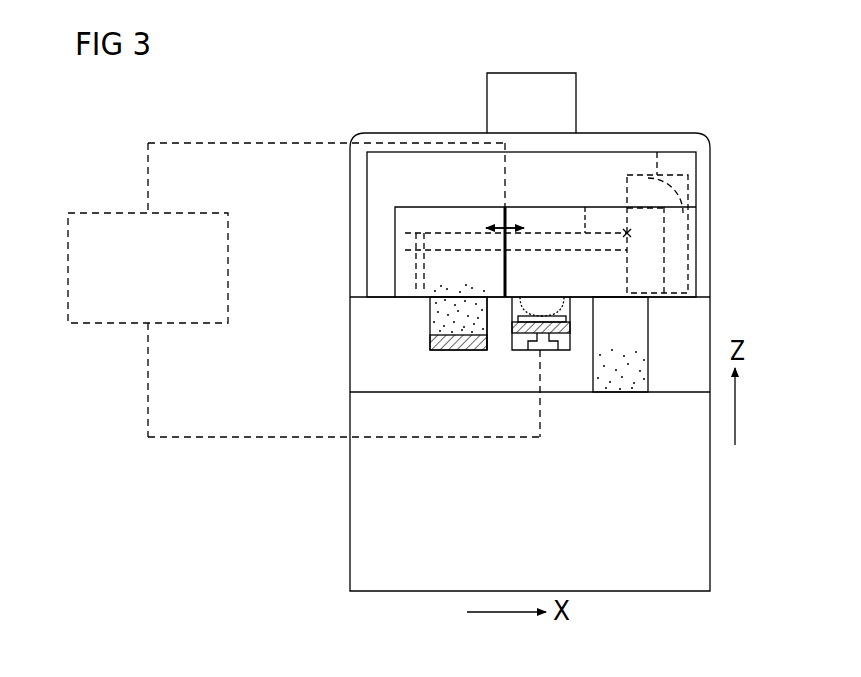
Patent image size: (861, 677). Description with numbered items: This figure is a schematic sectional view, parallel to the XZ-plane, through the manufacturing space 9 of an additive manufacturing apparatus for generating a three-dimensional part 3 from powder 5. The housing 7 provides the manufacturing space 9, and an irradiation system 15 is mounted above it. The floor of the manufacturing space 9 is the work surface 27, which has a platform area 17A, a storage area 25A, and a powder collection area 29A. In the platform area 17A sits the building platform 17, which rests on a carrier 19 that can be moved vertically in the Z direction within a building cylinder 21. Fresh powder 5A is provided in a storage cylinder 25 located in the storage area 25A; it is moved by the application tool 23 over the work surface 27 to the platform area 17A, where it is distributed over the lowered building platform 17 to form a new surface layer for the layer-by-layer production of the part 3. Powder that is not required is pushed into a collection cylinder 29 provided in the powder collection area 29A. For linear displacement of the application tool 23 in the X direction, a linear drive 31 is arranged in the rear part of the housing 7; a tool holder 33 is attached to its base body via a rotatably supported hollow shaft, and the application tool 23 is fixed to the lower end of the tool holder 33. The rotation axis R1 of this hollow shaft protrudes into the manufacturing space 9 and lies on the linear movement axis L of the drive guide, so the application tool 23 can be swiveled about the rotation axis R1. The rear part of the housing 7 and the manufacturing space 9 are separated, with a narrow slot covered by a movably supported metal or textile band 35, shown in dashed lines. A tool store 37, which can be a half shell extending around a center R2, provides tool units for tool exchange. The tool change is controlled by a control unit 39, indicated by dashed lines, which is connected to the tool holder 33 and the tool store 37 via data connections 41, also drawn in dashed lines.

The three-dimensional part 3 is at (552, 300).
The powder 5 is at (546, 298).
The new powder 5A is at (430, 320).
The housing 7 is at (712, 166).
The manufacturing space 9 is at (670, 266).
The irradiation system 15 is at (547, 88).
The building platform 17 is at (570, 318).
The platform area 17A is at (558, 231).
The carrier 19 is at (570, 334).
The building cylinder 21 is at (551, 359).
The application tool 23 is at (502, 294).
The storage cylinder 25 is at (430, 343).
The storage area 25A is at (440, 276).
The work surface 27 is at (375, 293).
The collection cylinder 29 is at (648, 338).
The powder collection area 29A is at (645, 263).
The linear drive 31 is at (615, 207).
The tool holder 33 is at (408, 242).
The metal or textile band 35 is at (500, 225).
The tool store 37 is at (681, 172).
The control unit 39 is at (228, 272).
The data connections 41 is at (244, 143).
The linear movement axis L is at (585, 207).
The rotation axis R1 is at (410, 240).
The center R2 is at (632, 232).